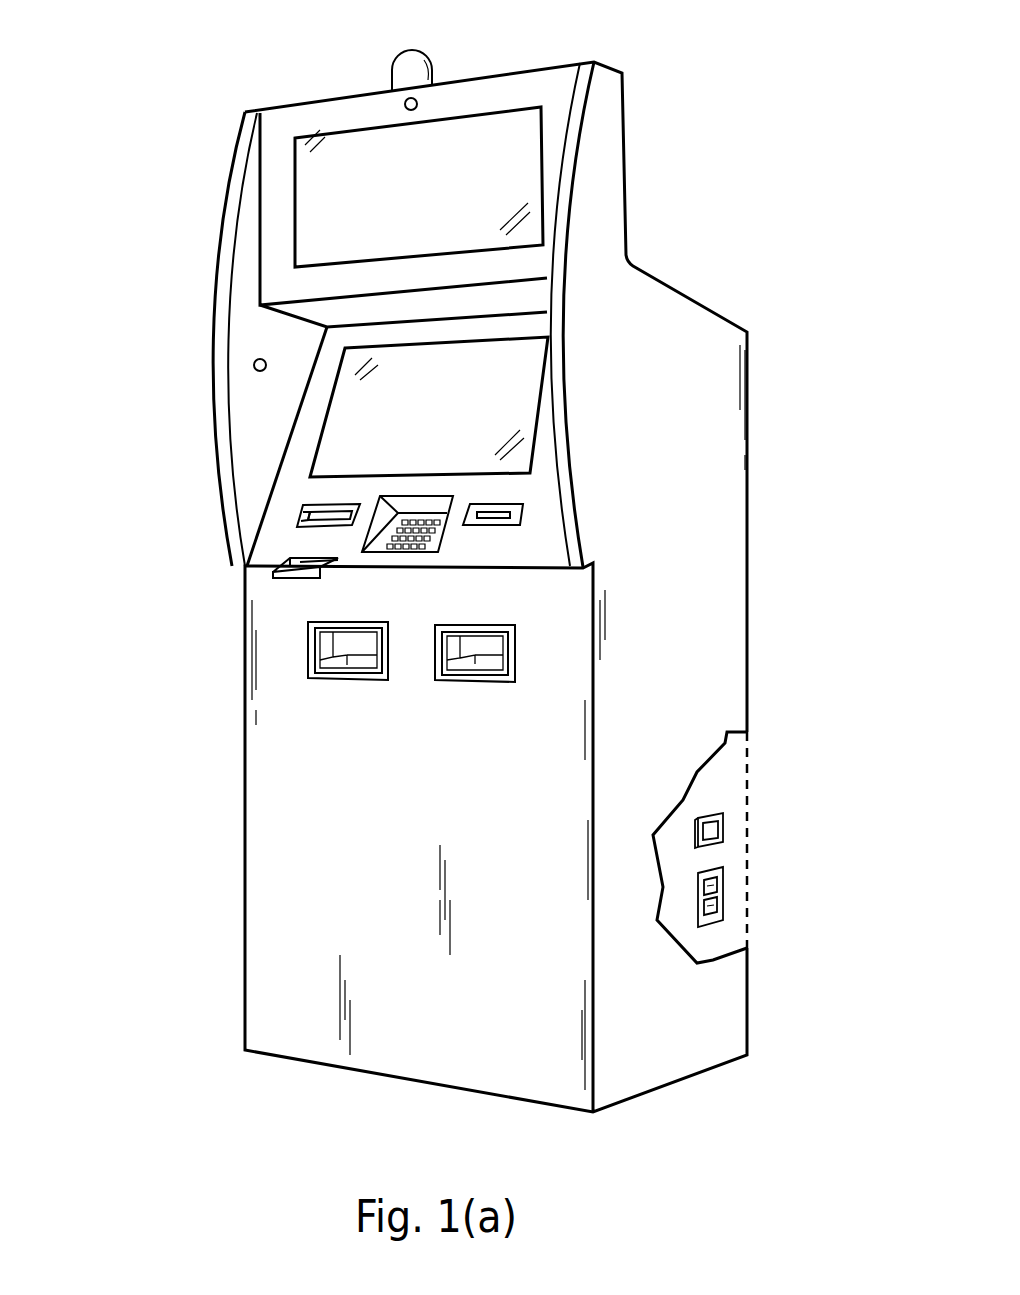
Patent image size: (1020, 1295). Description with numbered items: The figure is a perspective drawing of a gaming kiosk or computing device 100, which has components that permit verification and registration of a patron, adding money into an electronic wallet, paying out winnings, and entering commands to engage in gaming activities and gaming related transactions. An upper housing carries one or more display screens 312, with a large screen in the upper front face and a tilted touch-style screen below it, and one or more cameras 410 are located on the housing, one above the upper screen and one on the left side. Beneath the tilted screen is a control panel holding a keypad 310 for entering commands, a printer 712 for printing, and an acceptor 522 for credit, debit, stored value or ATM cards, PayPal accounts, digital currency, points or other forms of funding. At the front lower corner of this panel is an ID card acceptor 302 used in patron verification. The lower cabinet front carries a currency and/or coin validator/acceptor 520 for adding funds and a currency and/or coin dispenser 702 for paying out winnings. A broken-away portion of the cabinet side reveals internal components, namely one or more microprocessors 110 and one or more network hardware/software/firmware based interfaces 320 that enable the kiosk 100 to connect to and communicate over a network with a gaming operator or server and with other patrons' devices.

The kiosk or computing device 100 is at (360, 870).
The camera 410 is at (418, 105).
The display screen 312 is at (520, 373).
The printer 712 is at (320, 497).
The keypad 310 is at (423, 545).
The acceptor 522 is at (520, 518).
The ID card acceptor 302 is at (295, 580).
The currency and/or coin validator/acceptor 520 is at (308, 647).
The currency and/or coin dispenser 702 is at (473, 683).
The microprocessor 110 is at (718, 812).
The network hardware/software/firmware based interface 320 is at (725, 892).